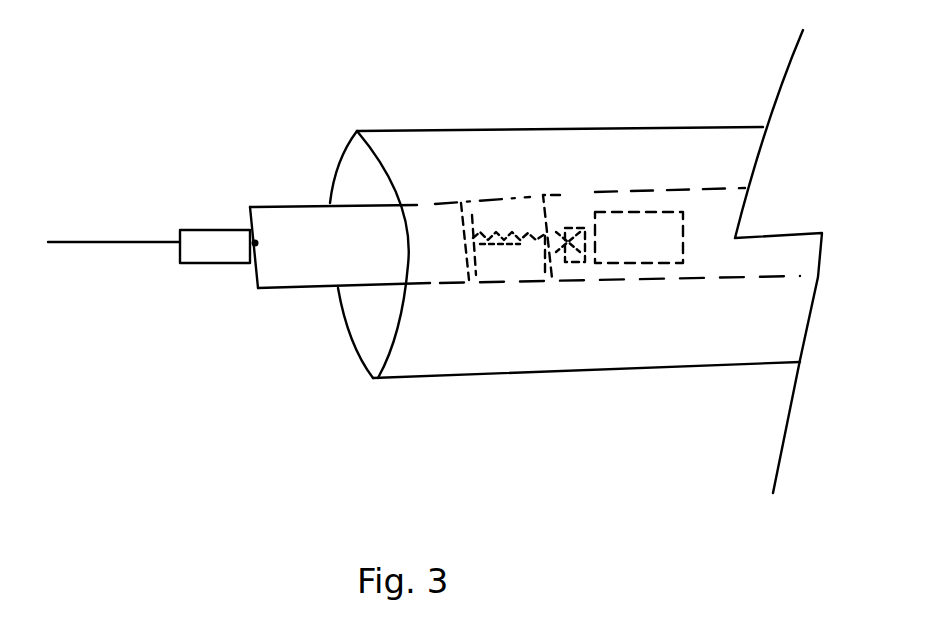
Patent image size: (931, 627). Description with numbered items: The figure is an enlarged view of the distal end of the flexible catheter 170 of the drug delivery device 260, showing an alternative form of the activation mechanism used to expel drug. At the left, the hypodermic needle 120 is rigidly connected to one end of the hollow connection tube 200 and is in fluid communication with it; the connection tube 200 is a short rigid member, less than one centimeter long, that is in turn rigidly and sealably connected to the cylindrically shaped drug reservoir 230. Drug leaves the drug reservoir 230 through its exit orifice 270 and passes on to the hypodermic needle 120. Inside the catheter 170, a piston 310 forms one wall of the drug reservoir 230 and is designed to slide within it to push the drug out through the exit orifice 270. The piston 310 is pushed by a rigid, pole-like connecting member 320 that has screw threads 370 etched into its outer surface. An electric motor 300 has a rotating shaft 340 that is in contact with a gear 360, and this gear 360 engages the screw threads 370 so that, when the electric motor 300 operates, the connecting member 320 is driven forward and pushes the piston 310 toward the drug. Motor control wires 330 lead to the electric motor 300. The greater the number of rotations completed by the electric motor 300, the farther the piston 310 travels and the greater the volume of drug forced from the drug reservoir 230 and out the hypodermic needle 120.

The hypodermic needle 120 is at (72, 242).
The connection tube 200 is at (205, 263).
The drug reservoir 230 is at (323, 290).
The exit orifice 270 is at (256, 241).
The flexible catheter 170 is at (583, 128).
The motor control wires 330 is at (700, 217).
The piston 310 is at (463, 205).
The connecting member 320 is at (525, 247).
The drug delivery device 260 is at (565, 190).
The electric motor 300 is at (627, 212).
The rotating shaft 340 is at (591, 258).
The gear 360 is at (575, 268).
The screw threads 370 is at (513, 241).